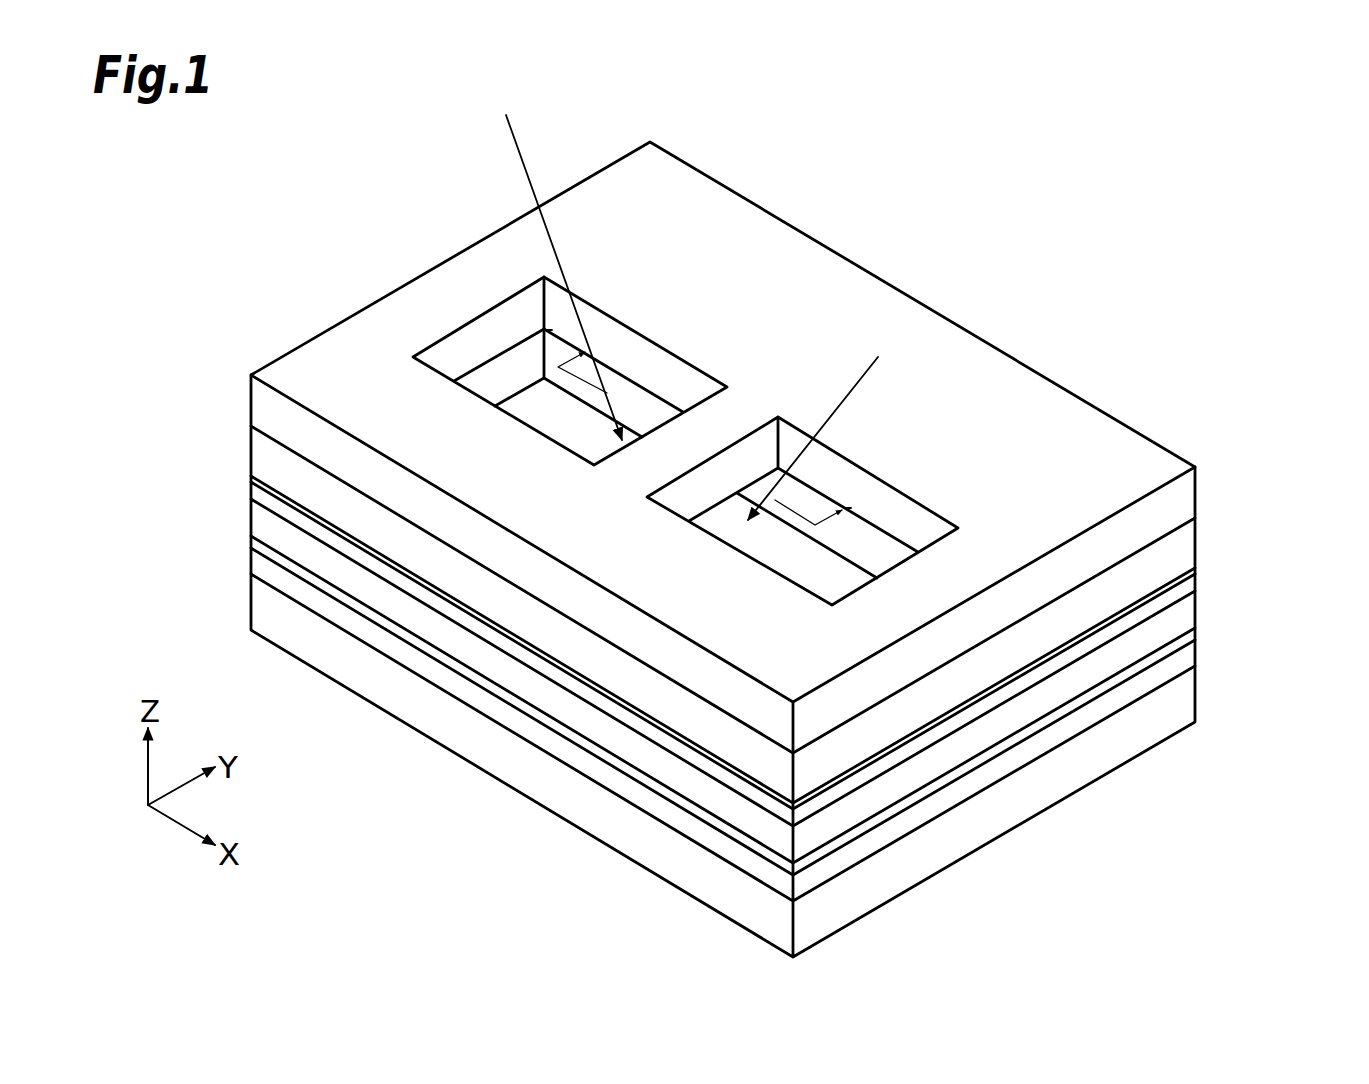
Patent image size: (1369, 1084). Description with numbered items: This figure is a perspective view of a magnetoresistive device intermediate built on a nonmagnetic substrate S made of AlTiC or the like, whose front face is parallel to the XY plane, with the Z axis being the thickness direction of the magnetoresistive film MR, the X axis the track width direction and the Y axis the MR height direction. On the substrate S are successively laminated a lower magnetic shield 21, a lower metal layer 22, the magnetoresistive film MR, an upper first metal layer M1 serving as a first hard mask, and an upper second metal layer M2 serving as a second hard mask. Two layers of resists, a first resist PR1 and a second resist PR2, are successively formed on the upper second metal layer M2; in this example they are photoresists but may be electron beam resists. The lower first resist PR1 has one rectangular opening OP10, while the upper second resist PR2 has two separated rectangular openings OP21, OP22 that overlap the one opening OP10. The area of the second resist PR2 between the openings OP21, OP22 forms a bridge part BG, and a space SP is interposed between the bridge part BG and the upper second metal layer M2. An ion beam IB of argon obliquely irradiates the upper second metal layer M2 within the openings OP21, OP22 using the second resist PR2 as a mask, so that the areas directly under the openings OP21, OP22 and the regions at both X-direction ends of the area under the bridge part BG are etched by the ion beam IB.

The rectangular opening OP10 is at (490, 357).
The rectangular opening OP21 is at (680, 357).
The rectangular opening OP22 is at (912, 497).
The bridge part BG is at (698, 437).
The ion beam IB is at (556, 242).
The space SP is at (716, 513).
The second resist PR2 is at (1183, 492).
The first resist PR1 is at (1183, 548).
The upper second metal layer M2 is at (1186, 577).
The upper first metal layer M1 is at (1183, 590).
The magnetoresistive film MR is at (1183, 617).
The lower metal layer 22 is at (1183, 638).
The lower magnetic shield 21 is at (1183, 660).
The substrate S is at (1183, 698).